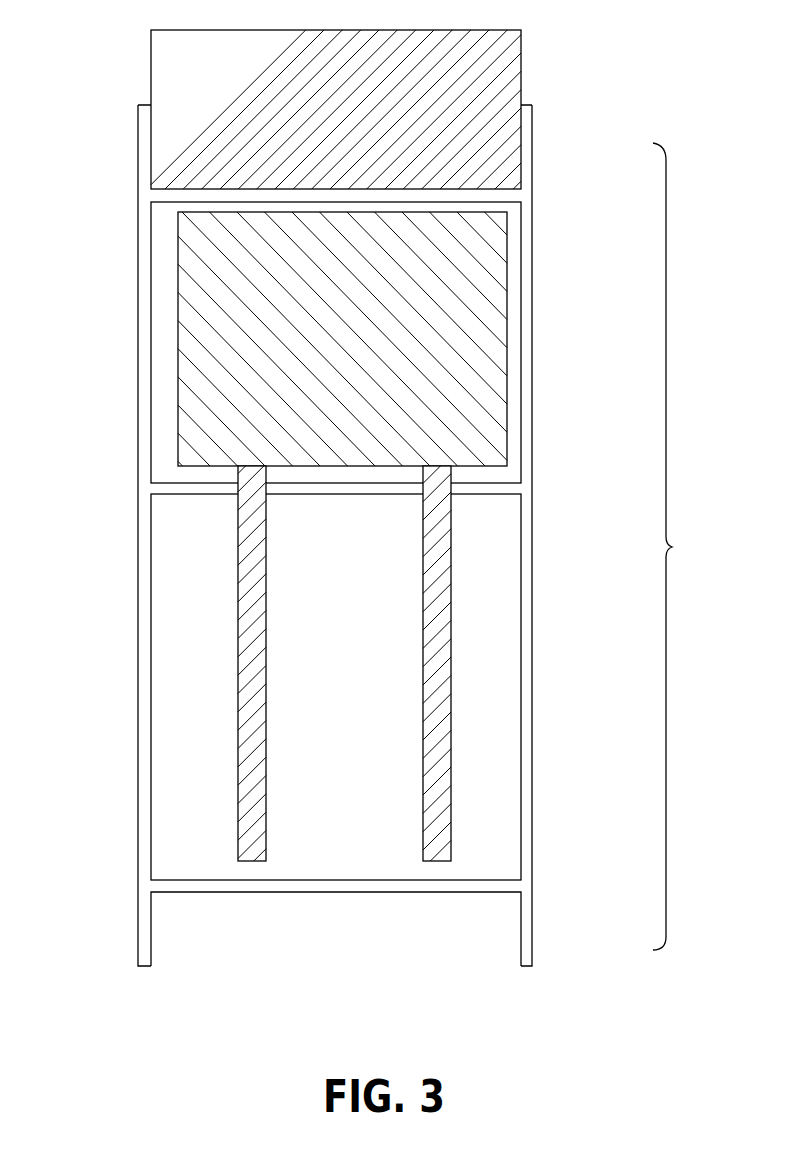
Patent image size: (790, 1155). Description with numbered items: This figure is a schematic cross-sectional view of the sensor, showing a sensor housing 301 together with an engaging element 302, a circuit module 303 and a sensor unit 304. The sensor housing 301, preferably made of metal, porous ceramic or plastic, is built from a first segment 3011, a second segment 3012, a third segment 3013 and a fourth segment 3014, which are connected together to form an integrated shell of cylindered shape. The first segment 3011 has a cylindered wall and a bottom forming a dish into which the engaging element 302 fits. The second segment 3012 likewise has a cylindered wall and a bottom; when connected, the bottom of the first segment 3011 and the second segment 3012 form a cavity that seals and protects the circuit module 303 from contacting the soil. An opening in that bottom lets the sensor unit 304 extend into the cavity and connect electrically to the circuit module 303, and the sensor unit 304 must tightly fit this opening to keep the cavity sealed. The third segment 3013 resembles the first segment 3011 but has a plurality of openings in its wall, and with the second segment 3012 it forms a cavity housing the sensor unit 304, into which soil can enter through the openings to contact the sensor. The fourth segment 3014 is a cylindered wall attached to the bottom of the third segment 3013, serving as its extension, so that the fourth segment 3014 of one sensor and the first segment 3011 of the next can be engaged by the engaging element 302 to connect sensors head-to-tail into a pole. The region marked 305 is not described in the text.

The sensor housing 301 is at (686, 546).
The first segment 3011 is at (533, 158).
The second segment 3012 is at (533, 348).
The third segment 3013 is at (533, 707).
The fourth segment 3014 is at (533, 933).
The engaging element 302 is at (151, 62).
The circuit module 303 is at (182, 267).
The sensor unit 304 is at (238, 622).
The filling material 305 is at (172, 797).